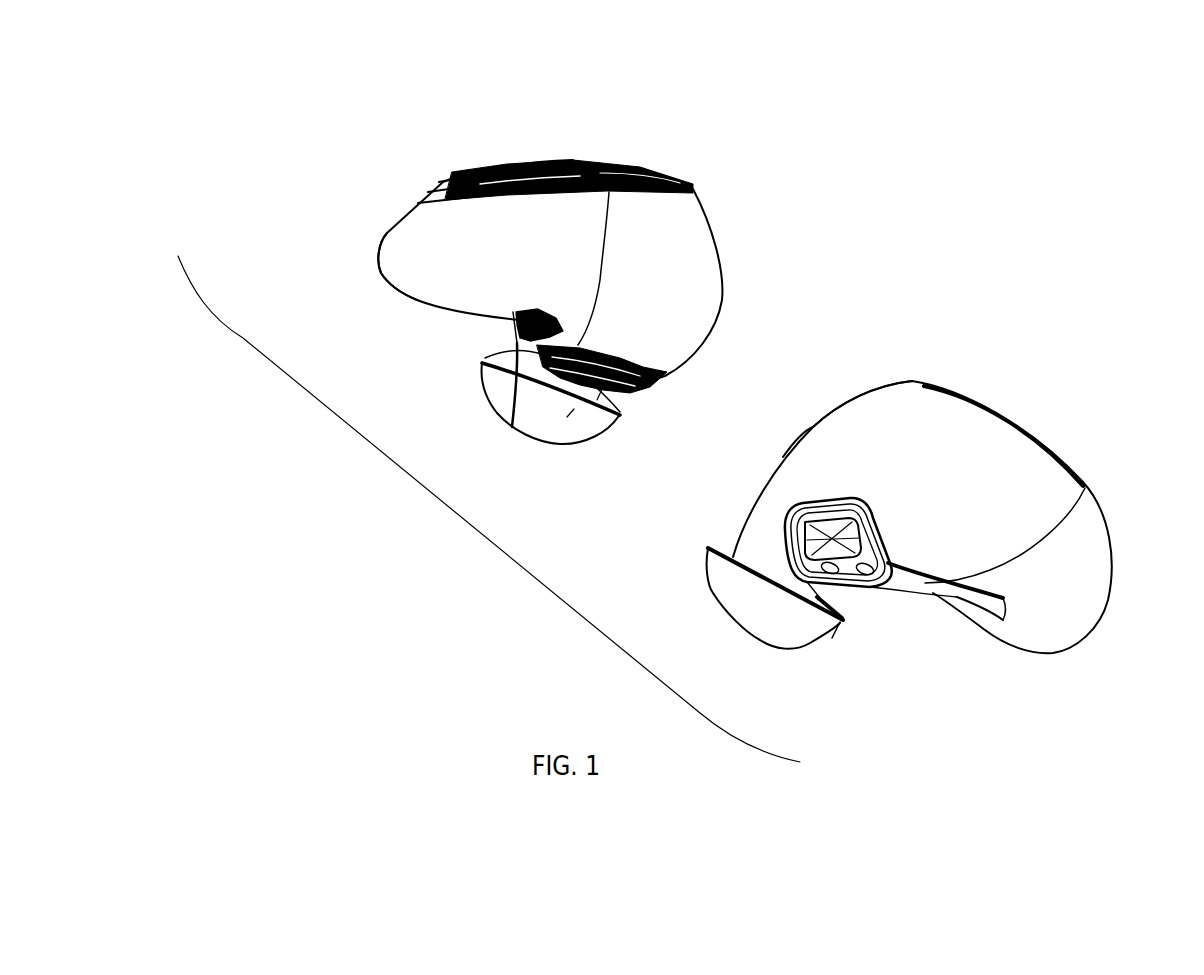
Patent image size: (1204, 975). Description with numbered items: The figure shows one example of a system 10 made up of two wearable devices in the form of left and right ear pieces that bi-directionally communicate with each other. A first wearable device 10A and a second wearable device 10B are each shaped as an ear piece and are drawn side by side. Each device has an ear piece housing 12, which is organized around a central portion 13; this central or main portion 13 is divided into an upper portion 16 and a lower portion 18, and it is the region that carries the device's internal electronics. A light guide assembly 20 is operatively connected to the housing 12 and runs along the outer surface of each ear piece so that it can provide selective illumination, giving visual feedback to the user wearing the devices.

The system 10 is at (480, 538).
The first wearable device 10A is at (545, 245).
The second wearable device 10B is at (909, 485).
The ear piece housing 12 is at (512, 259).
The central portion 13 is at (410, 243).
The upper portion 16 is at (428, 199).
The lower portion 18 is at (477, 317).
The light guide assembly 20 is at (585, 160).